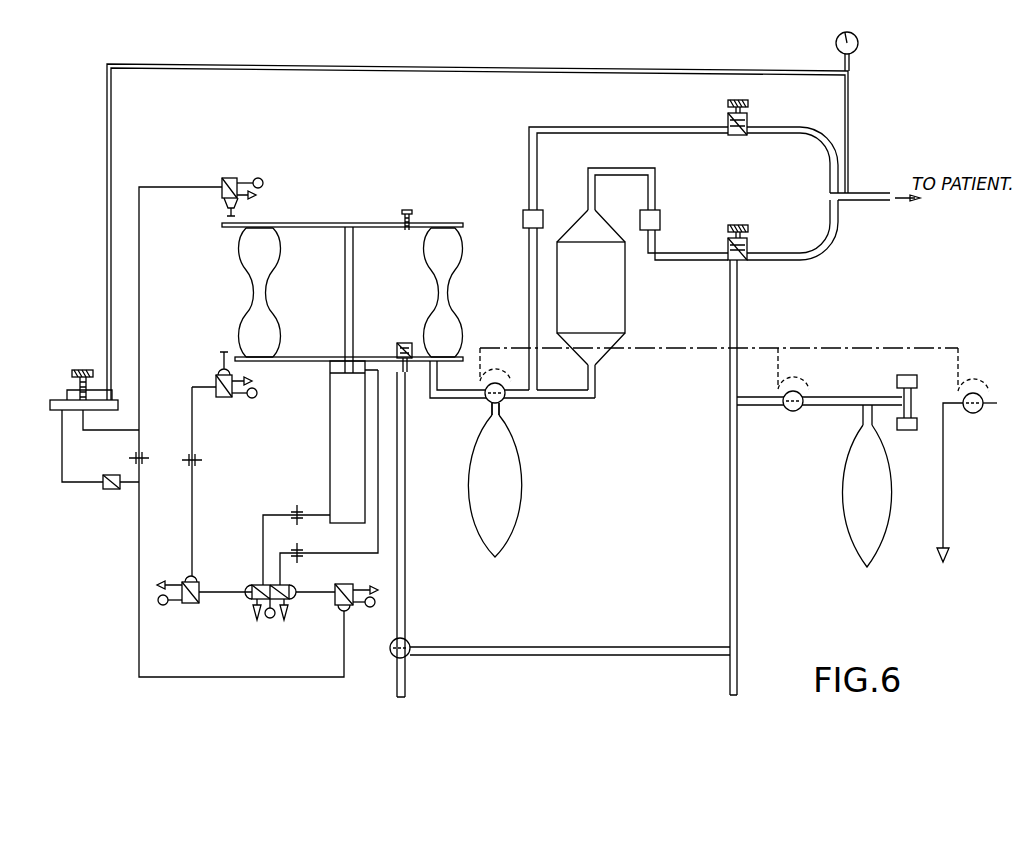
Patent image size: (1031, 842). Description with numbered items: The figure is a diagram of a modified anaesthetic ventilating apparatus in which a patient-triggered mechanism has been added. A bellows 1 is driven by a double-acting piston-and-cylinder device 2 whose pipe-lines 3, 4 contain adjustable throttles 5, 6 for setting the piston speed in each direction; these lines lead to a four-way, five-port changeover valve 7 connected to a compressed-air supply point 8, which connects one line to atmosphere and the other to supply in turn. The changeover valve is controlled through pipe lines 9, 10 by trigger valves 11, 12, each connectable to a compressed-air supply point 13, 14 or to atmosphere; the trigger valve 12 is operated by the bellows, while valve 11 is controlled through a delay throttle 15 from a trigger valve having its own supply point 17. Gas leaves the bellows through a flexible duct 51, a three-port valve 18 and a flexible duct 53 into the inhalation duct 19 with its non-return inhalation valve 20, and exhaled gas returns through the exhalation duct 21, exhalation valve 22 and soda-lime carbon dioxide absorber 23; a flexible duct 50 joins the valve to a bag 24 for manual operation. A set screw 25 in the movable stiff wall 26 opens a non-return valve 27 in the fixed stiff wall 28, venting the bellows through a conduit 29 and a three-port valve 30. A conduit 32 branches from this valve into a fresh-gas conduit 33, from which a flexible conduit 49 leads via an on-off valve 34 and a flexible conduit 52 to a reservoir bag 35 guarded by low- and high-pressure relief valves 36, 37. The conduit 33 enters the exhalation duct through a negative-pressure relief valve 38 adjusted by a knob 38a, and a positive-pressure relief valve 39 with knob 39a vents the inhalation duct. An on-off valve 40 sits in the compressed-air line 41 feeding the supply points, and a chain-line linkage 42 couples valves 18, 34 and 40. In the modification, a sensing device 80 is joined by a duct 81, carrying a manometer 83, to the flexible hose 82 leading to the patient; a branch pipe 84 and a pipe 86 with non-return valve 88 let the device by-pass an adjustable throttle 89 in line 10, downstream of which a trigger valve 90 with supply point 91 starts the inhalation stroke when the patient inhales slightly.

The bellows 1 is at (453, 320).
The double-acting piston-and-cylinder device 2 is at (344, 382).
The pipe-line 3 is at (263, 521).
The pipe-line 4 is at (350, 553).
The adjustable throttle 5 is at (295, 507).
The adjustable throttle 6 is at (297, 545).
The four-way, five-port changeover valve 7 is at (253, 588).
The compressed-air supply point 8 is at (271, 620).
The pipe line 9 is at (190, 497).
The pipe line 10 is at (141, 318).
The trigger valve 11 is at (192, 605).
The trigger valve 12 is at (226, 177).
The compressed-air supply point 13 is at (163, 606).
The compressed-air supply point 14 is at (262, 178).
The throttle 15 is at (197, 458).
The compressed-air supply point 17 is at (258, 393).
The two-way, three-port valve 18 is at (502, 404).
The inhalation duct 19 is at (698, 134).
The inhalation valve 20 is at (523, 212).
The exhalation duct 21 is at (818, 254).
The exhalation valve 22 is at (660, 216).
The carbon dioxide absorber 23 is at (602, 294).
The bag 24 is at (524, 488).
The set screw 25 is at (408, 209).
The movable stiff wall 26 is at (308, 222).
The non-return valve 27 is at (398, 347).
The fixed stiff wall 28 is at (298, 356).
The conduit 29 is at (406, 545).
The two-way, three-port valve 30 is at (408, 641).
The conduit 32 is at (570, 646).
The conduit 33 is at (738, 596).
The on-off valve 34 is at (797, 411).
The reservoir bag 35 is at (840, 488).
The relief valve 36 is at (906, 431).
The relief valve 37 is at (917, 382).
The negative-pressure relief valve 38 is at (748, 245).
The knob 38a is at (742, 225).
The positive-pressure relief valve 39 is at (748, 118).
The knob 39a is at (727, 103).
The on-off valve 40 is at (978, 412).
The compressed-air line 41 is at (944, 501).
The linkage 42 is at (762, 348).
The flexible conduit 49 is at (762, 406).
The flexible duct 50 is at (490, 410).
The flexible duct 51 is at (440, 399).
The flexible conduit 52 is at (830, 396).
The flexible duct 53 is at (508, 398).
The sensing device 80 is at (112, 390).
The duct 81 is at (568, 67).
The flexible hose 82 is at (878, 201).
The manometer 83 is at (860, 44).
The branch pipe 84 is at (88, 431).
The pipe 86 is at (66, 484).
The non-return valve 88 is at (111, 490).
The adjustable throttle 89 is at (141, 456).
The trigger valve 90 is at (338, 606).
The compressed-air supply point 91 is at (370, 608).